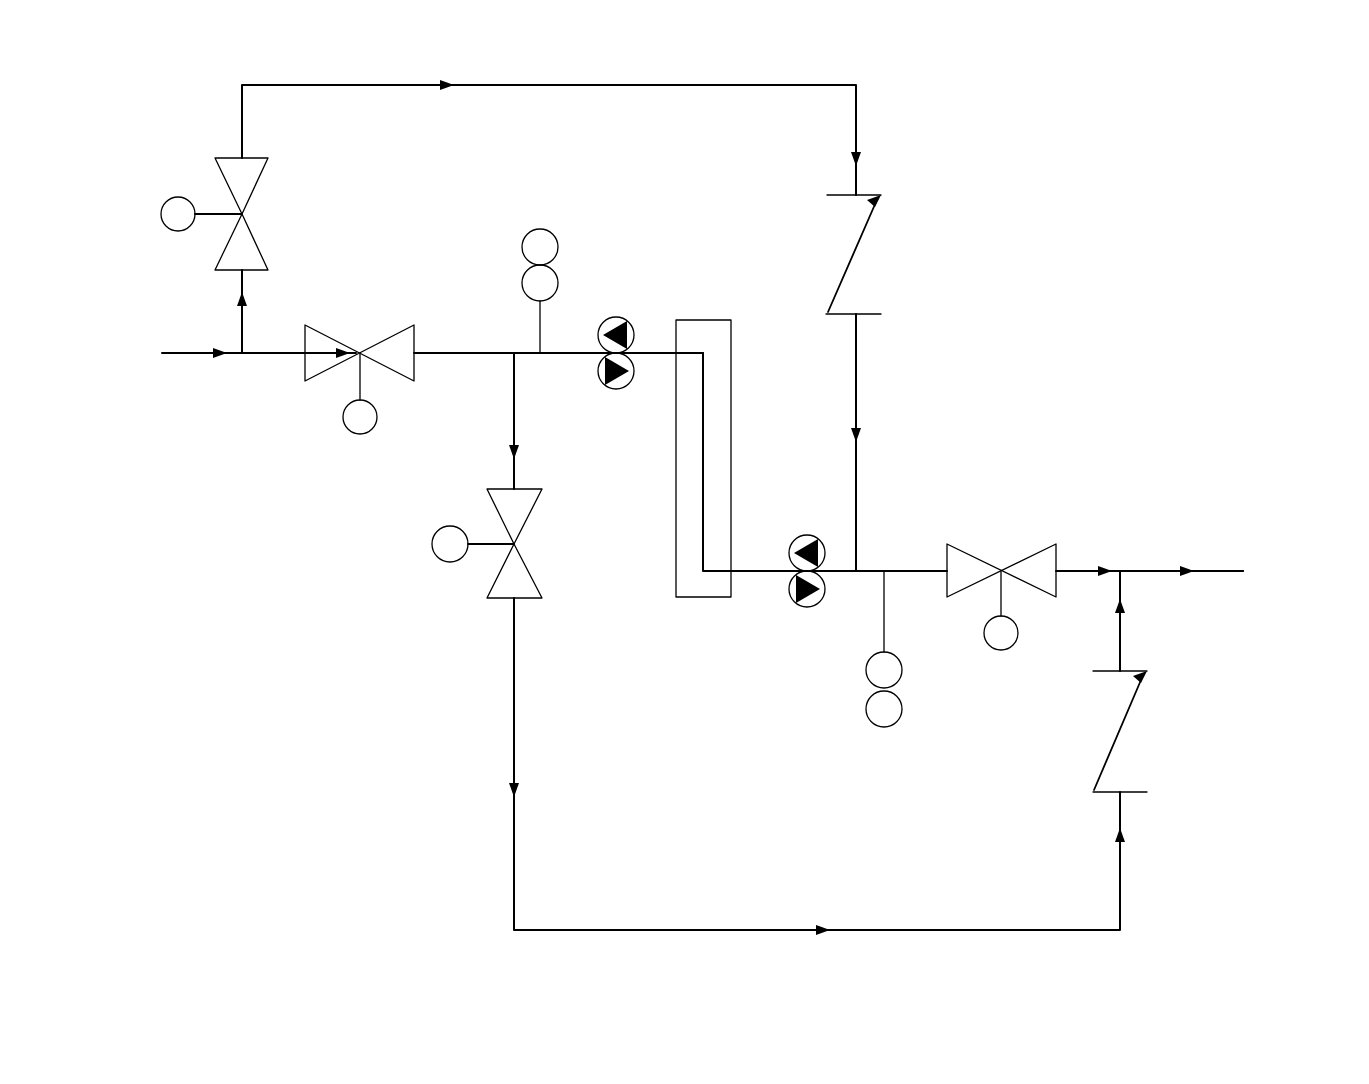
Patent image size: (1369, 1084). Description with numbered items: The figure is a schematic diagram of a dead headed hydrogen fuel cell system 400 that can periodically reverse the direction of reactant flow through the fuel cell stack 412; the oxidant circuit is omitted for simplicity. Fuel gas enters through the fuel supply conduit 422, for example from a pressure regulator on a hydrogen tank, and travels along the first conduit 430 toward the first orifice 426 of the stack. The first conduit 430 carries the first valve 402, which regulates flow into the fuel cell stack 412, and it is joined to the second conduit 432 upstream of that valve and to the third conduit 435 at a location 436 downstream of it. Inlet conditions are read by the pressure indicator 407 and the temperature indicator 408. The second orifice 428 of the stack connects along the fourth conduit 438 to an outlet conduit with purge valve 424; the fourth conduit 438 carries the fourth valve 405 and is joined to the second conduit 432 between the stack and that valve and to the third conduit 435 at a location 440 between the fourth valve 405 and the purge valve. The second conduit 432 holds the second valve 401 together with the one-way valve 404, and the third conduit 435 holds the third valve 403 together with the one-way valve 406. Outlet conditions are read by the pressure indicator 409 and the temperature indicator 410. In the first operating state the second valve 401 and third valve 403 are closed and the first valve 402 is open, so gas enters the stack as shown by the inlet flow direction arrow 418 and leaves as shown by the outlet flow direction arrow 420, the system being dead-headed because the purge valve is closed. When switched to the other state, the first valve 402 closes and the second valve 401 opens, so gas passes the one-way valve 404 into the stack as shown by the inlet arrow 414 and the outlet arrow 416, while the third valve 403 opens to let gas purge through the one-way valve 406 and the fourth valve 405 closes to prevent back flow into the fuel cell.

The dead headed hydrogen fuel cell system 400 is at (1090, 424).
The second valve ALTV-1 401 is at (257, 185).
The first valve NFV-1 402 is at (325, 325).
The third valve ALTV-2 403 is at (530, 513).
The one-way valve ALTCV-1 404 is at (883, 230).
The fourth valve NFV-2 405 is at (1010, 518).
The one-way valve ALTCV-2 406 is at (1147, 775).
The pressure indicator P1 407 is at (528, 287).
The temperature indicator T1 408 is at (557, 245).
The pressure indicator P1 409 is at (903, 675).
The temperature indicator T1 410 is at (867, 707).
The fuel cell stack 412 is at (702, 320).
The inlet arrow 414 is at (807, 537).
The outlet arrow 416 is at (617, 317).
The inlet flow direction arrow 418 is at (616, 390).
The outlet flow direction arrow 420 is at (808, 608).
The fuel supply conduit 422 is at (183, 352).
The outlet conduit with purge valve 424 is at (1305, 533).
The first orifice 426 is at (683, 352).
The second orifice 428 is at (797, 575).
The first conduit 430 is at (217, 355).
The second conduit 432 is at (240, 122).
The third conduit 435 is at (514, 707).
The coupling location 436 is at (513, 355).
The fourth conduit 438 is at (1220, 572).
The coupling location 440 is at (1121, 568).